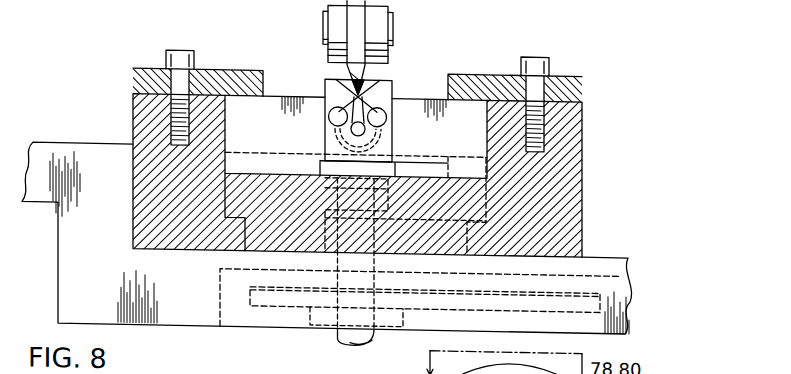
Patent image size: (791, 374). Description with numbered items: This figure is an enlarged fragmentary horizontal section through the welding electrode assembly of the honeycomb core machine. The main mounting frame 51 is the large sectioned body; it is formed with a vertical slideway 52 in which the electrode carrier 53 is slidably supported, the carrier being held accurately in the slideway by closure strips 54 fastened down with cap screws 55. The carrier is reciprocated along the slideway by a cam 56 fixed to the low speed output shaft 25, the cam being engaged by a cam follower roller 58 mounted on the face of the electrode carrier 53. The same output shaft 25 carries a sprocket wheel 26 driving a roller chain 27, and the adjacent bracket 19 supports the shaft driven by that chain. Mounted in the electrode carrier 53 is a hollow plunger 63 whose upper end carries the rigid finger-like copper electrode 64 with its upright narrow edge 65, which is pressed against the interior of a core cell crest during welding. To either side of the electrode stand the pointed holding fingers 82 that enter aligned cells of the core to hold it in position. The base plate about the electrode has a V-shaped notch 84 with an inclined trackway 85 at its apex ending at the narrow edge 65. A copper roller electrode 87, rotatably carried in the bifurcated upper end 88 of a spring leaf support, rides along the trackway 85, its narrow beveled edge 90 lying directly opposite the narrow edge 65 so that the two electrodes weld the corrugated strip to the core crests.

The bracket 19 is at (51, 142).
The low speed output shaft 25 is at (336, 328).
The sprocket wheel 26 is at (300, 312).
The roller chain 27 is at (257, 305).
The main mounting frame 51 is at (582, 179).
The slideway 52 is at (227, 104).
The electrode carrier 53 is at (280, 95).
The closure strips 54 is at (133, 78).
The cap screws 55 is at (173, 46).
The cam 56 is at (453, 141).
The cam follower roller 58 is at (325, 188).
The hollow plunger 63 is at (392, 138).
The finger-like copper electrode 64 is at (338, 122).
The narrow edge 65 is at (392, 84).
The holding fingers 82 is at (330, 116).
The V-shaped notch 84 is at (347, 72).
The inclined trackway 85 is at (342, 93).
The copper roller electrode 87 is at (348, 21).
The bifurcated upper end 88 is at (378, 16).
The narrow beveled edge 90 is at (366, 35).